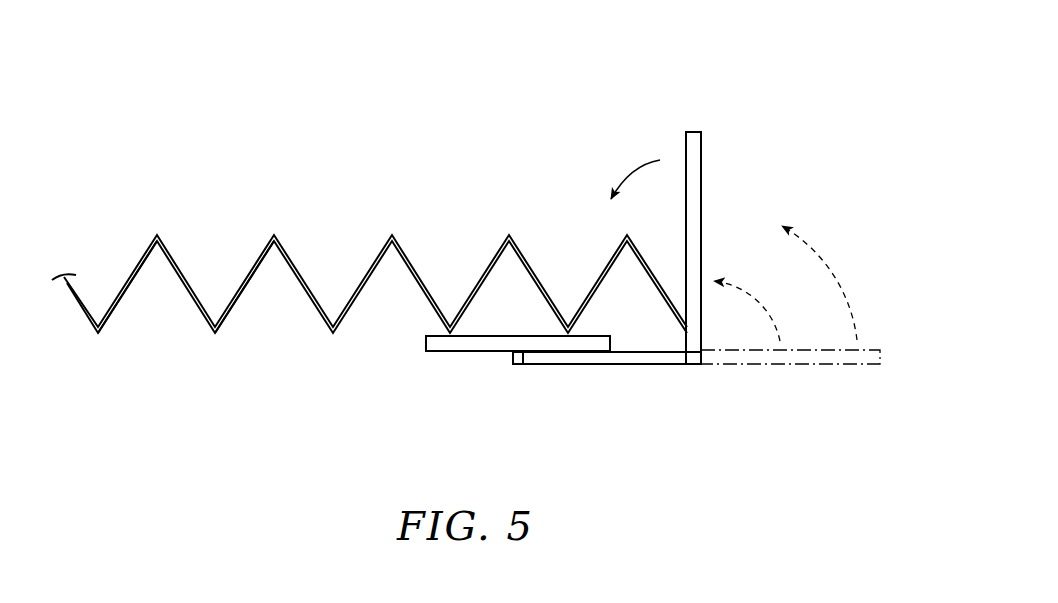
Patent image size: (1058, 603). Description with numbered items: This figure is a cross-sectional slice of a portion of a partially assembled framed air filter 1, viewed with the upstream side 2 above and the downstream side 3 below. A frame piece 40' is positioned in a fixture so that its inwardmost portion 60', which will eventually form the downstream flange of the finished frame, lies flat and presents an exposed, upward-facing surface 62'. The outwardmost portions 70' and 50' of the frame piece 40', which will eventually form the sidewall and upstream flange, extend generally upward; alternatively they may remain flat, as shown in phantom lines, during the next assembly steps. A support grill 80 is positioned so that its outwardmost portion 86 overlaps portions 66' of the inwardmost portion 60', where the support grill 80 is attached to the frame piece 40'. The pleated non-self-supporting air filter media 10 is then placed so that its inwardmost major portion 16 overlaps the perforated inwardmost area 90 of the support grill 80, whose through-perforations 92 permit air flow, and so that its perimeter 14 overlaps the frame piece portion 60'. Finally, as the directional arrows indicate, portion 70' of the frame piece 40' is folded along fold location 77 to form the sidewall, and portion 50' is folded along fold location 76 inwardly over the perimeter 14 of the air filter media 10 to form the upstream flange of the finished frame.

The framed air filter 1 is at (682, 60).
The upstream side 2 is at (400, 117).
The downstream side 3 is at (275, 436).
The non-self-supporting air filter media 10 is at (257, 252).
The perimeter 14 is at (610, 340).
The inwardmost major portion of air filter media 16 is at (228, 310).
The frame piece 40' is at (729, 248).
The outwardmost portion of frame piece 50' is at (672, 113).
The inwardmost portion of frame piece 60' is at (607, 385).
The exposed surface 62' is at (551, 379).
The portion of inwardmost portion 66' is at (591, 379).
The outwardmost portion of frame piece 70' is at (735, 240).
The fold location 76 is at (690, 237).
The fold location 77 is at (693, 358).
The support grill 80 is at (440, 352).
The outwardmost portion of support grill 86 is at (522, 365).
The inwardmost area of support grill 90 is at (221, 347).
The through-perforations 92 is at (158, 345).